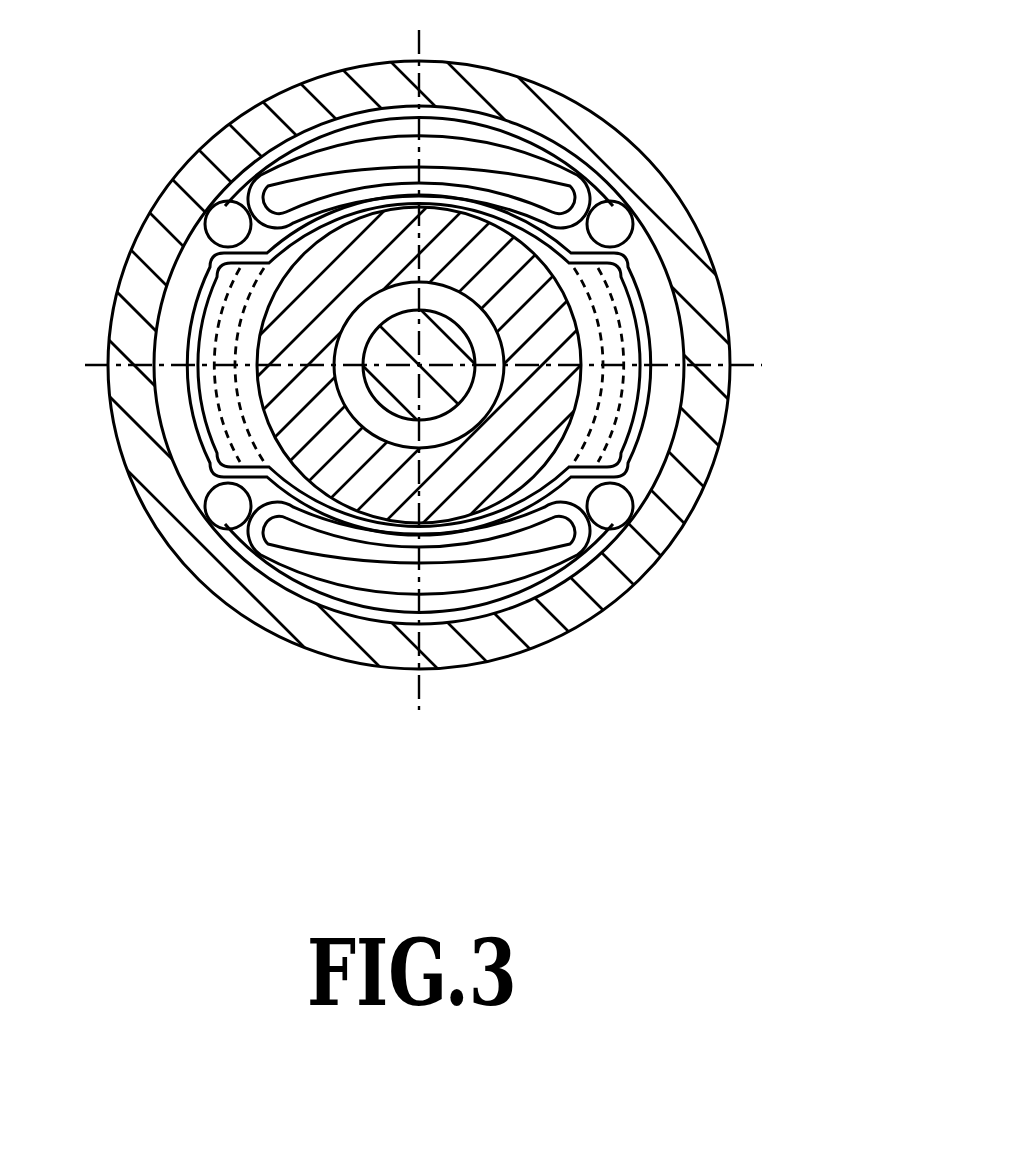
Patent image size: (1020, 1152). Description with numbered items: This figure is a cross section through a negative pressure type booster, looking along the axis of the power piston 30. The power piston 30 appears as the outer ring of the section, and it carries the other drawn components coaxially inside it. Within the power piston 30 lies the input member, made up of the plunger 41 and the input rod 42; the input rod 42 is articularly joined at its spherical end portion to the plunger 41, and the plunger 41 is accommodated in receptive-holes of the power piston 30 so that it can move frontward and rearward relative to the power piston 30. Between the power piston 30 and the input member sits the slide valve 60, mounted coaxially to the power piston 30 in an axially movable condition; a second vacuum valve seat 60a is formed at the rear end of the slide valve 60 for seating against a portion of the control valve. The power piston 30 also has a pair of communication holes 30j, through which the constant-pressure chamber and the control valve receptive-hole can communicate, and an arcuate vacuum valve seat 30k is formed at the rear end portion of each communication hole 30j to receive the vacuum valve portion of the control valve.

The power piston 30 is at (185, 160).
The arcuate vacuum valve seat 30k is at (467, 130).
The communication hole 30j is at (507, 170).
The plunger 41 is at (360, 427).
The input rod 42 is at (388, 353).
The slide valve 60 is at (633, 273).
The second vacuum valve seat 60a is at (658, 427).